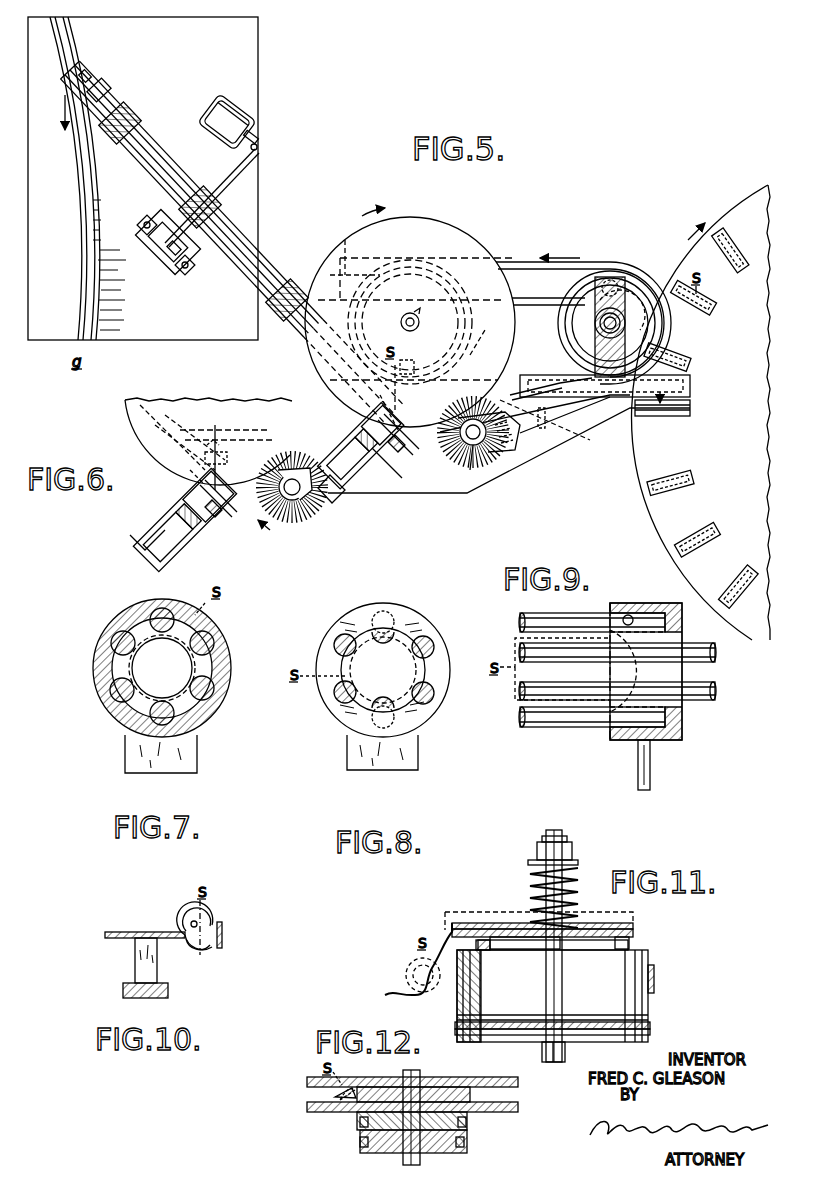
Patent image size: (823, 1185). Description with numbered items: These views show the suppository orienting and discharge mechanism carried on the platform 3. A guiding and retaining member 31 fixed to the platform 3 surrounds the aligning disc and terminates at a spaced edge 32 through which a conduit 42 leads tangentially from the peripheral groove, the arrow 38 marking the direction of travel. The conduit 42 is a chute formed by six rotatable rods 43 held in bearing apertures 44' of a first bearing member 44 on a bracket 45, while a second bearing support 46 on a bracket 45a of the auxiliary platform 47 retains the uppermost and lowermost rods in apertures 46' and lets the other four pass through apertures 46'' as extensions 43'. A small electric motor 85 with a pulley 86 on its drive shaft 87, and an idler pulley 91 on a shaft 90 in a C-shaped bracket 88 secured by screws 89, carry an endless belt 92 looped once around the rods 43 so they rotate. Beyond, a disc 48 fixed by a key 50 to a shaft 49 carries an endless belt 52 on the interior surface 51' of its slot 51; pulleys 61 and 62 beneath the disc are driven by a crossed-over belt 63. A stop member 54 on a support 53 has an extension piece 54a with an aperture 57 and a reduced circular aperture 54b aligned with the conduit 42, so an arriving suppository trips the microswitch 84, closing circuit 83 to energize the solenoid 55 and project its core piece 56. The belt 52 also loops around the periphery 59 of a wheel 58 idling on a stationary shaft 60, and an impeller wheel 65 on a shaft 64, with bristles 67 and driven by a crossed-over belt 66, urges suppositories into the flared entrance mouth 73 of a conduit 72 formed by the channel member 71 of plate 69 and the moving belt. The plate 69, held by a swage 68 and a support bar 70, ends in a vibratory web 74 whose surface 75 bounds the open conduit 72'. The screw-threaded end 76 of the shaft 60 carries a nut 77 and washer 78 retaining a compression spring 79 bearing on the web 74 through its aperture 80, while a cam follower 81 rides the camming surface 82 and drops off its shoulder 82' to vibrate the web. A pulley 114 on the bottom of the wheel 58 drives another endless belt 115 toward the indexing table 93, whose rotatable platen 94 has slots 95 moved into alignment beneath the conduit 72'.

In FIG. 5, the platform 3 is at (258, 47).
In FIG. 5, the guiding and retaining member 31 is at (102, 311).
In FIG. 5, the terminal edge of guiding and retaining member 32 is at (88, 77).
In FIG. 5, the direction of travel arrow 38 is at (64, 131).
In FIG. 5, the conduit 42 is at (102, 90).
In FIG. 5, the rotatable rods 43 is at (233, 243).
In FIG. 7, the rotatable rods 43 is at (163, 666).
In FIG. 8, the rotatable rods 43 is at (384, 670).
In FIG. 9, the rotatable rods 43 is at (573, 672).
In FIG. 5, the rod extensions 43' is at (303, 365).
In FIG. 6, the rod extensions 43' is at (148, 437).
In FIG. 8, the rod extensions 43' is at (383, 705).
In FIG. 9, the rod extensions 43' is at (637, 671).
In FIG. 12, the rod extensions 43' is at (320, 1112).
In FIG. 5, the first bearing member 44 is at (140, 123).
In FIG. 7, the first bearing member 44 is at (176, 668).
In FIG. 7, the bearing apertures 44' is at (135, 602).
In FIG. 7, the bracket 45 is at (130, 748).
In FIG. 8, the bracket 45a is at (350, 750).
In FIG. 9, the bracket 45a is at (640, 765).
In FIG. 5, the second bearing support 46 is at (244, 253).
In FIG. 8, the second bearing support 46 is at (373, 670).
In FIG. 9, the second bearing support 46 is at (648, 661).
In FIG. 8, the bearing apertures 46' is at (401, 605).
In FIG. 9, the bearing apertures 46' is at (635, 604).
In FIG. 8, the bearing apertures 46'' is at (386, 720).
In FIG. 5, the auxiliary platform 47 is at (433, 494).
In FIG. 10, the auxiliary platform 47 is at (123, 990).
In FIG. 5, the disc 48 is at (421, 219).
In FIG. 6, the disc 48 is at (126, 398).
In FIG. 12, the disc 48 is at (455, 1082).
In FIG. 5, the shaft 49 is at (401, 320).
In FIG. 12, the shaft 49 is at (408, 1085).
In FIG. 5, the key 50 is at (419, 316).
In FIG. 5, the slot 51 is at (415, 290).
In FIG. 12, the slot 51 is at (292, 1088).
In FIG. 12, the interior surface of slot 51' is at (343, 1114).
In FIG. 5, the endless belt 52 is at (530, 262).
In FIG. 10, the endless belt 52 is at (223, 938).
In FIG. 11, the endless belt 52 is at (655, 980).
In FIG. 12, the endless belt 52 is at (470, 1095).
In FIG. 5, the support 53 is at (340, 505).
In FIG. 5, the stop member 54 is at (405, 455).
In FIG. 6, the stop member 54 is at (225, 515).
In FIG. 5, the extension piece 54a is at (385, 475).
In FIG. 6, the extension piece 54a is at (222, 428).
In FIG. 5, the circular aperture 54b is at (418, 360).
In FIG. 5, the solenoid 55 is at (361, 446).
In FIG. 6, the solenoid 55 is at (140, 518).
In FIG. 5, the core piece 56 is at (375, 445).
In FIG. 6, the core piece 56 is at (175, 482).
In FIG. 5, the aperture 57 is at (385, 425).
In FIG. 6, the aperture 57 is at (190, 465).
In FIG. 5, the wheel 58 is at (575, 295).
In FIG. 11, the wheel 58 is at (552, 991).
In FIG. 5, the periphery of wheel 59 is at (600, 268).
In FIG. 11, the periphery of wheel 59 is at (648, 962).
In FIG. 5, the stationary shaft 60 is at (616, 328).
In FIG. 11, the stationary shaft 60 is at (565, 1053).
In FIG. 12, the pulley 61 is at (360, 1137).
In FIG. 12, the pulley 62 is at (460, 1150).
In FIG. 5, the crossed-over endless belt 63 is at (344, 248).
In FIG. 12, the crossed-over endless belt 63 is at (468, 1123).
In FIG. 5, the shaft 64 is at (445, 465).
In FIG. 5, the impeller wheel 65 is at (488, 450).
In FIG. 6, the impeller wheel 65 is at (300, 505).
In FIG. 5, the crossed-over endless belt 66 is at (486, 334).
In FIG. 12, the crossed-over endless belt 66 is at (465, 1143).
In FIG. 5, the bristles 67 is at (483, 480).
In FIG. 6, the bristles 67 is at (292, 515).
In FIG. 5, the swage 68 is at (500, 447).
In FIG. 5, the plate 69 is at (690, 407).
In FIG. 10, the plate 69 is at (120, 931).
In FIG. 11, the plate 69 is at (402, 998).
In FIG. 5, the support bar 70 is at (531, 425).
In FIG. 10, the support bar 70 is at (136, 960).
In FIG. 5, the channel member 71 is at (525, 392).
In FIG. 10, the channel member 71 is at (192, 920).
In FIG. 5, the conduit 72 is at (576, 412).
In FIG. 10, the conduit 72 is at (186, 927).
In FIG. 5, the open conduit portion 72' is at (668, 375).
In FIG. 11, the open conduit portion 72' is at (429, 1010).
In FIG. 5, the flared entrance mouth 73 is at (512, 395).
In FIG. 5, the vibratory web 74 is at (628, 290).
In FIG. 11, the vibratory web 74 is at (485, 911).
In FIG. 11, the surface 75 is at (440, 940).
In FIG. 11, the screw-threaded end 76 is at (553, 829).
In FIG. 5, the nut 77 is at (593, 318).
In FIG. 11, the nut 77 is at (537, 848).
In FIG. 5, the washer 78 is at (623, 318).
In FIG. 11, the washer 78 is at (575, 862).
In FIG. 11, the compression spring 79 is at (531, 877).
In FIG. 11, the aperture 80 is at (580, 925).
In FIG. 5, the cam follower 81 is at (603, 276).
In FIG. 11, the cam follower 81 is at (634, 934).
In FIG. 5, the camming surface 82 is at (660, 313).
In FIG. 11, the camming surface 82 is at (525, 919).
In FIG. 11, the shoulder 82' is at (468, 917).
In FIG. 5, the circuit 83 is at (690, 386).
In FIG. 6, the circuit 83 is at (178, 545).
In FIG. 5, the microswitch 84 is at (402, 448).
In FIG. 6, the microswitch 84 is at (218, 508).
In FIG. 5, the electric motor 85 is at (250, 112).
In FIG. 5, the pulley 86 is at (260, 147).
In FIG. 5, the drive shaft 87 is at (258, 136).
In FIG. 5, the C-shaped bracket 88 is at (160, 260).
In FIG. 5, the screws 89 is at (191, 270).
In FIG. 5, the shaft 90 is at (182, 249).
In FIG. 5, the idler pulley 91 is at (160, 232).
In FIG. 5, the endless belt 92 is at (224, 182).
In FIG. 5, the indexing table 93 is at (647, 518).
In FIG. 5, the rotatable platen 94 is at (642, 470).
In FIG. 5, the slots 95 is at (735, 250).
In FIG. 11, the pulley 114 is at (650, 1024).
In FIG. 11, the endless belt 115 is at (650, 1032).